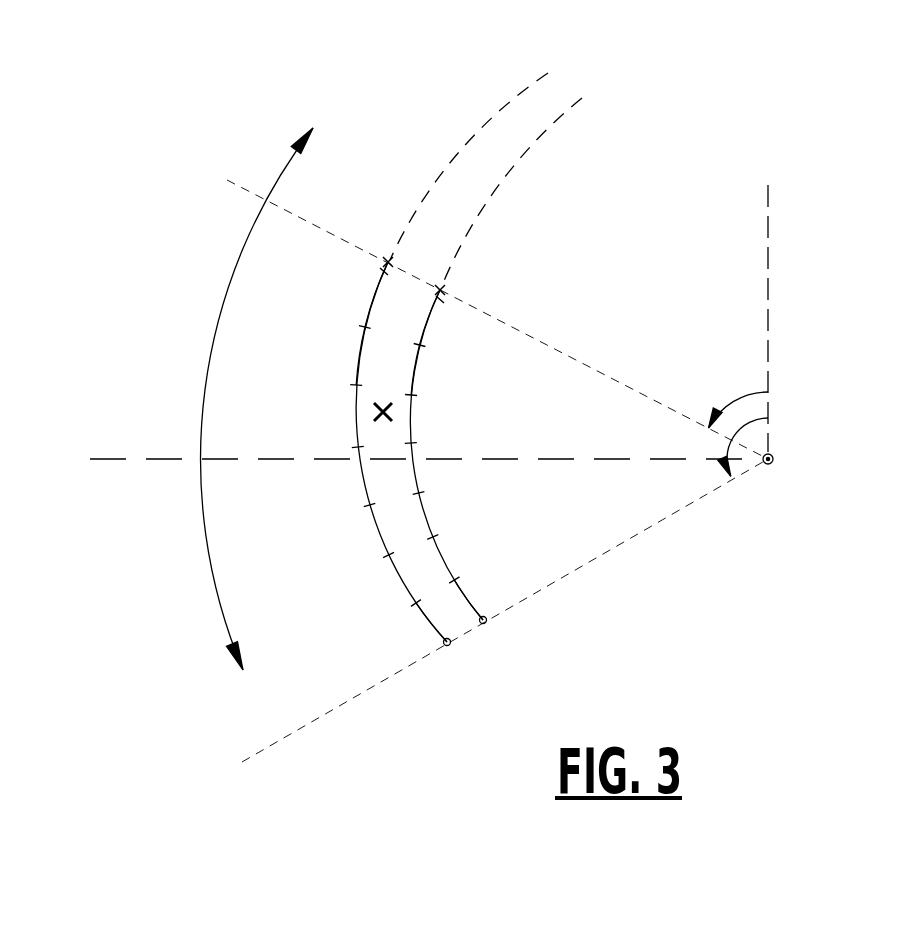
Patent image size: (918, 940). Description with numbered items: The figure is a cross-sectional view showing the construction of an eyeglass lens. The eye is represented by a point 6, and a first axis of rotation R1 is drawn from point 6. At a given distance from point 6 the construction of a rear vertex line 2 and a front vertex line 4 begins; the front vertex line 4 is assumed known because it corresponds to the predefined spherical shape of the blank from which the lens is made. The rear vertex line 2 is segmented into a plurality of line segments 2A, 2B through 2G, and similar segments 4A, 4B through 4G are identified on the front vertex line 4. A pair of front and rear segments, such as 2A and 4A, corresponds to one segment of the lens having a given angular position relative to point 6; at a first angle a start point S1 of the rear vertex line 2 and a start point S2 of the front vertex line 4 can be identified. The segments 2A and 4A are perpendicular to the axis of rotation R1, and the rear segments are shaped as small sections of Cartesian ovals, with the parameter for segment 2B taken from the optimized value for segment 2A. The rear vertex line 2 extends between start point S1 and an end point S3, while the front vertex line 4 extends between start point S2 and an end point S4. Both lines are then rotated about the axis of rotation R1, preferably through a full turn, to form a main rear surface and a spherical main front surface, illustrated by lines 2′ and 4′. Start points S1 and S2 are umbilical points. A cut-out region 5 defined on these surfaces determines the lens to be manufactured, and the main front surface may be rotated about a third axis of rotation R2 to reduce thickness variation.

The first axis of rotation R1 is at (243, 187).
The third axis of rotation R2 is at (372, 412).
The front vertex line 4 is at (377, 530).
The line illustrating rotation of front vertex line 4′ is at (490, 123).
The front vertex line segment 4A is at (371, 302).
The front vertex line segment 4B is at (358, 355).
The front vertex line segment 4G is at (434, 627).
The rear vertex line 2 is at (428, 318).
The line illustrating rotation of rear vertex line 2′ is at (532, 148).
The rear vertex line segment 2A is at (425, 330).
The rear vertex line segment 2B is at (414, 375).
The rear vertex line segment 2G is at (470, 604).
The cut-out region 5 is at (216, 318).
The point representing the eye 6 is at (774, 464).
The start point of rear vertex line S1 is at (447, 283).
The start point of front vertex line S2 is at (388, 260).
The end point of rear vertex line S3 is at (486, 622).
The end point of front vertex line S4 is at (447, 648).